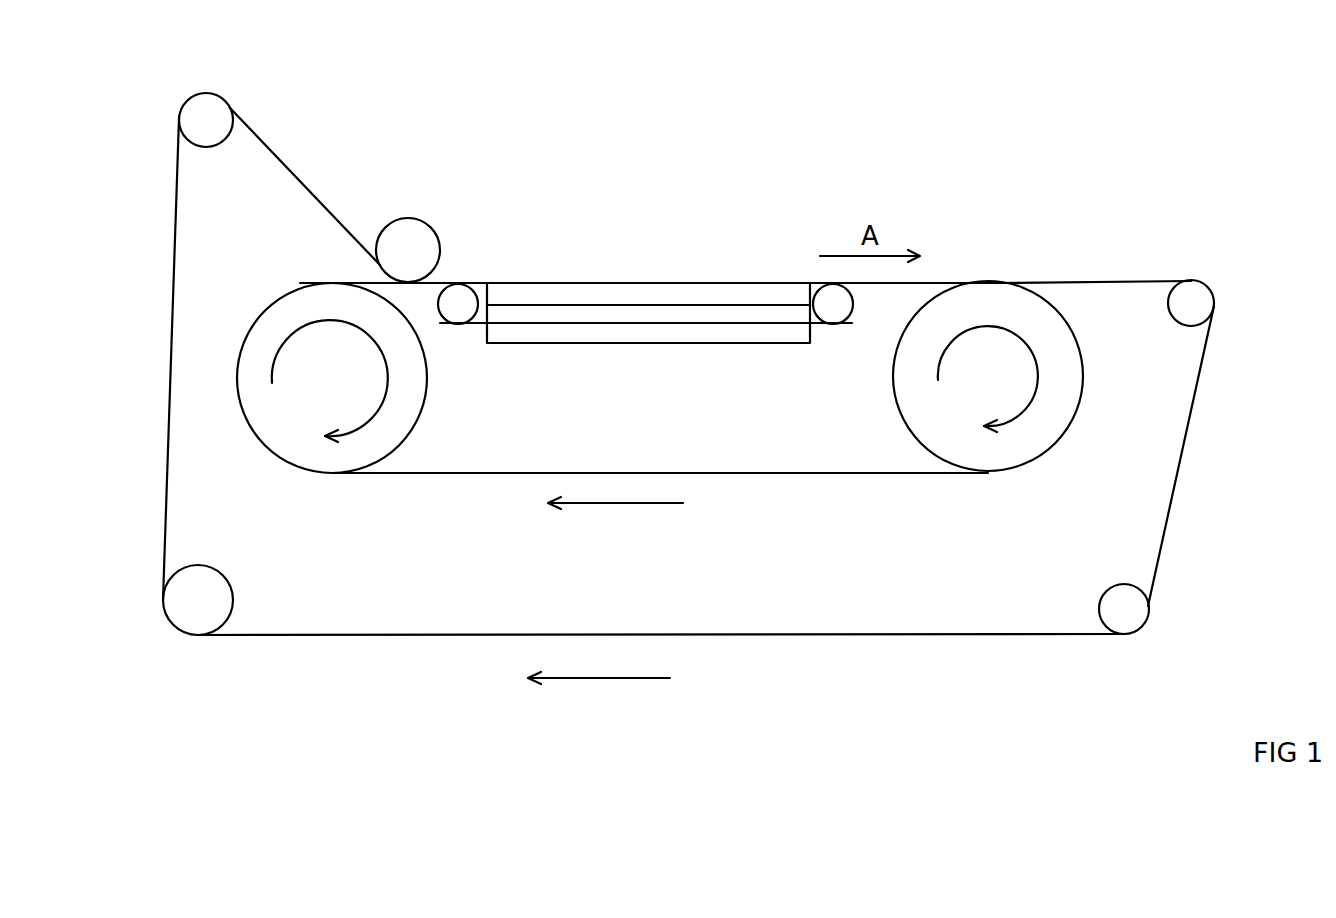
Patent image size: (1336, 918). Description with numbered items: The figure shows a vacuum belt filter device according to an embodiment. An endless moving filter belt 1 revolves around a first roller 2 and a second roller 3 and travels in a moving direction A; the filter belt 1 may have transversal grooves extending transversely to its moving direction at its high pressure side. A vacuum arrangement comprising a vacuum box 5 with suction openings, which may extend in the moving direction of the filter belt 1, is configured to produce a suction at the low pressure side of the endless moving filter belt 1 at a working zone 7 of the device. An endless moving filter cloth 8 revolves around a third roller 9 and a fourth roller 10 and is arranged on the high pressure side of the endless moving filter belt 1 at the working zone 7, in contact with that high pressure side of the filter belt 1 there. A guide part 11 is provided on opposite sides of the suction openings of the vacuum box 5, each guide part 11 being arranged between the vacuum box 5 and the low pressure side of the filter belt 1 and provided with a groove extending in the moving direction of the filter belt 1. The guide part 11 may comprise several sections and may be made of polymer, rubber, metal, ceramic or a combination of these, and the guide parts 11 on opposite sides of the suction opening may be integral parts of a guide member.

The endless moving filter belt 1 is at (813, 474).
The first roller 2 is at (257, 398).
The second roller 3 is at (1070, 397).
The vacuum box 5 is at (580, 312).
The working zone 7 is at (678, 261).
The endless moving filter cloth 8 is at (973, 635).
The third roller 9 is at (187, 107).
The fourth roller 10 is at (1195, 300).
The guide part 11 is at (760, 300).